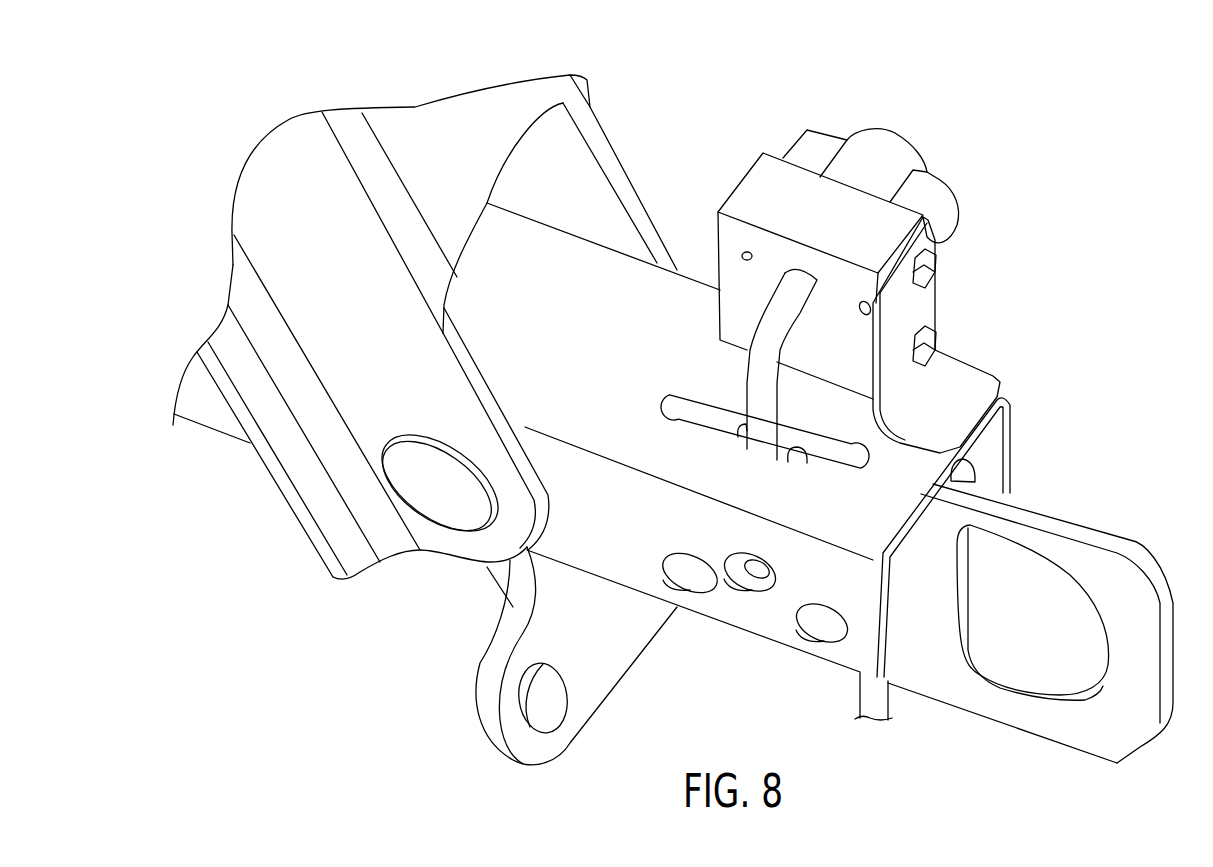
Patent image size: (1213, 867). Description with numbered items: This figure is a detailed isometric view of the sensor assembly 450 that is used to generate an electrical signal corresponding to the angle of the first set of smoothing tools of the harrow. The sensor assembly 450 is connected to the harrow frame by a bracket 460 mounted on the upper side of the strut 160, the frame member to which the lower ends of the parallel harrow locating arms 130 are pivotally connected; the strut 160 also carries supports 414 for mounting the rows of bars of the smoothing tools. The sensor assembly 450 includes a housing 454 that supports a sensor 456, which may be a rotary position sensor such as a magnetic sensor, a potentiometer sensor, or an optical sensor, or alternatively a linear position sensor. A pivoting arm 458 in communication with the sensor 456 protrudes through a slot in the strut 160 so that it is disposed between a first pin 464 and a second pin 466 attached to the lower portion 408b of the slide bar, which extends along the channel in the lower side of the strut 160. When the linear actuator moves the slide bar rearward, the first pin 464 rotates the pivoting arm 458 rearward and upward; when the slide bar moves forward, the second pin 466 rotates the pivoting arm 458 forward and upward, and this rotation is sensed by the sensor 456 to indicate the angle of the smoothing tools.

The harrow locating arm 130 is at (483, 128).
The strut 160 is at (570, 283).
The lower portion of slide bar 408b is at (925, 682).
The support 414 is at (560, 630).
The sensor assembly 450 is at (801, 120).
The housing 454 is at (757, 190).
The sensor 456 is at (890, 143).
The pivoting arm 458 is at (763, 372).
The bracket 460 is at (922, 312).
The first pin 464 is at (747, 430).
The second pin 466 is at (800, 458).